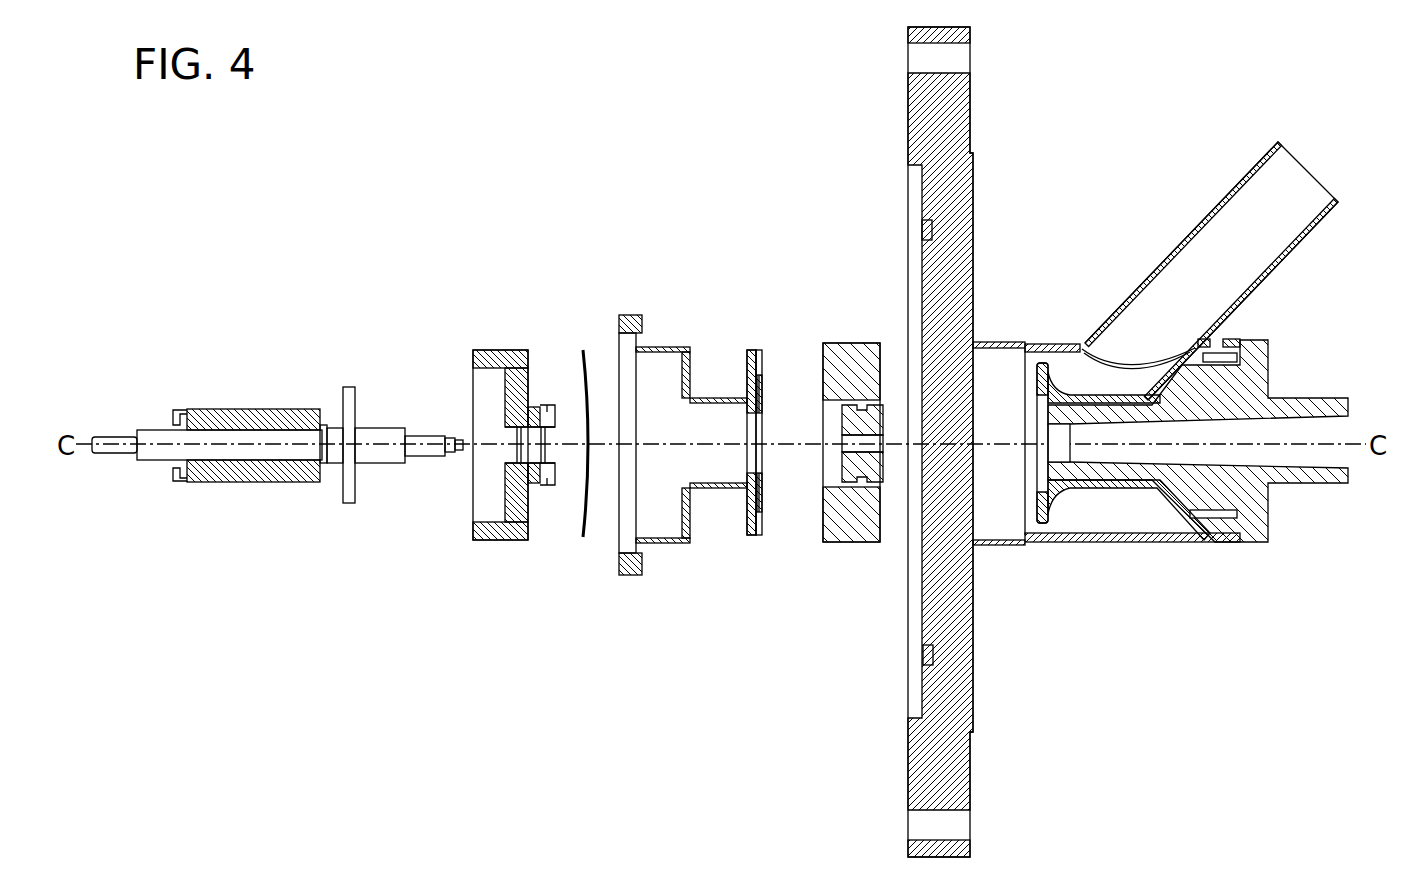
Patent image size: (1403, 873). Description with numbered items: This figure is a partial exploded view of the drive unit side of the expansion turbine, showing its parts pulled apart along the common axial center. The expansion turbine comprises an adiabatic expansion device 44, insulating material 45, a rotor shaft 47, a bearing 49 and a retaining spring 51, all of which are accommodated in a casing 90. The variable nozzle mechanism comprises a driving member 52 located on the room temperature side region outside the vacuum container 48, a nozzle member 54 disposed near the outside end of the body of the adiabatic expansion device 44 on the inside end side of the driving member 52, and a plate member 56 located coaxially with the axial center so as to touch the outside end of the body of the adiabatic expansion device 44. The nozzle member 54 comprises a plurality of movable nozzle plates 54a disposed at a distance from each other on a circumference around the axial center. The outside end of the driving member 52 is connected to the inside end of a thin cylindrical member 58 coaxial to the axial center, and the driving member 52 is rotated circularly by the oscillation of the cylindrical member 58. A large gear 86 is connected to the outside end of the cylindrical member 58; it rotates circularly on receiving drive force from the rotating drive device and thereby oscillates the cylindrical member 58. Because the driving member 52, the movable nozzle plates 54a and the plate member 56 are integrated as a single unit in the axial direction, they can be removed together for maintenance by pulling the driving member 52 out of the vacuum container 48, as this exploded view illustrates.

The adiabatic expansion device 44 is at (1042, 372).
The insulating material 45 is at (847, 530).
The rotor shaft 47 is at (233, 452).
The vacuum container 48 is at (1129, 622).
The bearing 49 is at (485, 540).
The retaining spring 51 is at (583, 532).
The driving member 52 is at (752, 350).
The nozzle member 54 is at (762, 352).
The movable nozzle plates 54a is at (759, 443).
The plate member 56 is at (763, 397).
The cylindrical member 58 is at (705, 385).
The large gear 86 is at (628, 313).
The casing 90 is at (957, 765).